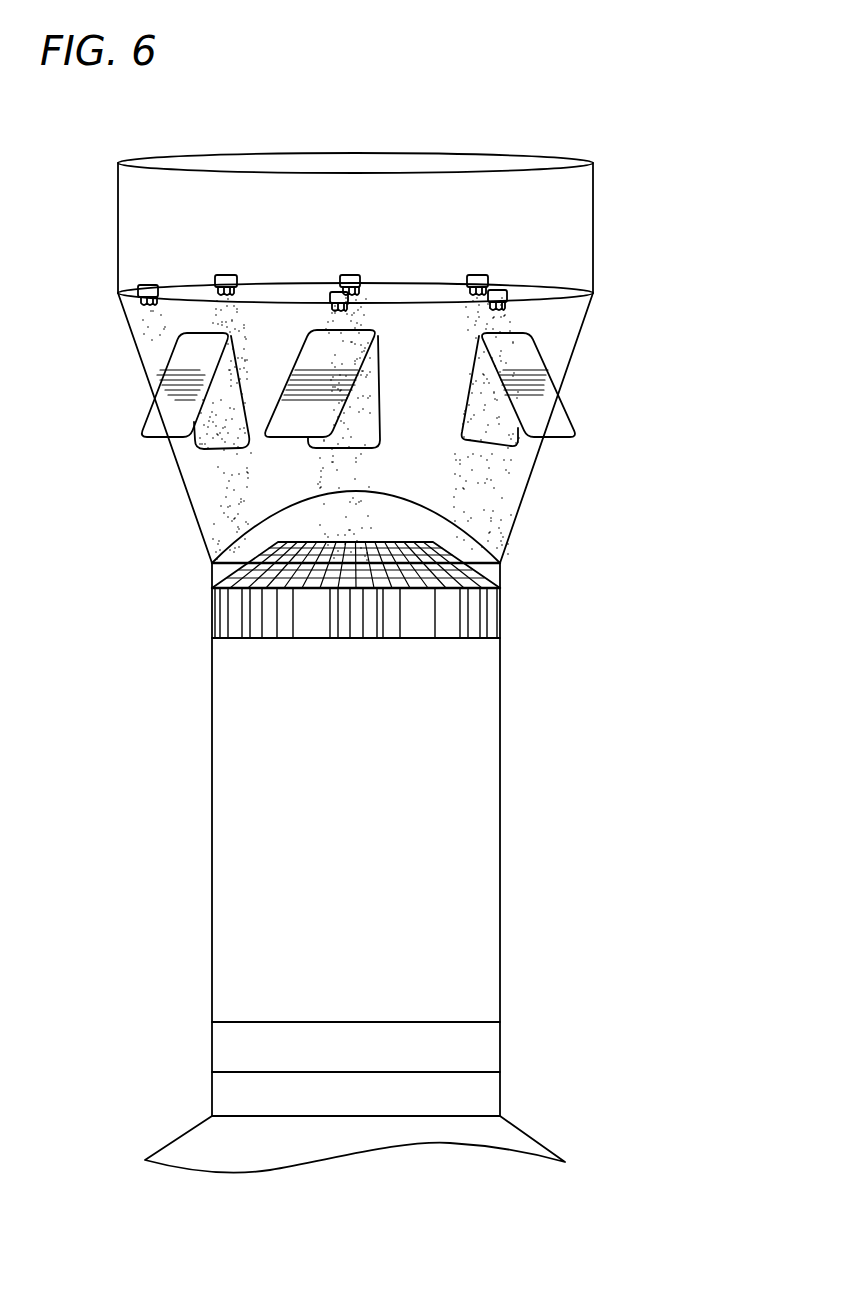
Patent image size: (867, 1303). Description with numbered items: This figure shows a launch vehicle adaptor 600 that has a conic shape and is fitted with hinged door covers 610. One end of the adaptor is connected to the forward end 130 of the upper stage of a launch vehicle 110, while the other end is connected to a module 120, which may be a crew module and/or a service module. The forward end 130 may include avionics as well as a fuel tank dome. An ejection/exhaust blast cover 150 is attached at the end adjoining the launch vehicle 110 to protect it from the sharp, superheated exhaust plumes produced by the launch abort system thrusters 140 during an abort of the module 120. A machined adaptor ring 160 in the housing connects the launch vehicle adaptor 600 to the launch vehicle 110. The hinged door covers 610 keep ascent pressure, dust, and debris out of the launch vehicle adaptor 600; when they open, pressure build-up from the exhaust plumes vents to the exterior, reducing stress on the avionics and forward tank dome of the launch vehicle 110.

The launch vehicle 110 is at (673, 587).
The module 120 is at (673, 162).
The forward end of the upper stage of the launch vehicle 130 is at (300, 553).
The launch abort system thrusters 140 is at (333, 304).
The ejection/exhaust blast cover 150 is at (234, 528).
The machined adaptor ring 160 is at (184, 577).
The launch vehicle adaptor 600 is at (673, 293).
The hinged door covers 610 is at (317, 398).